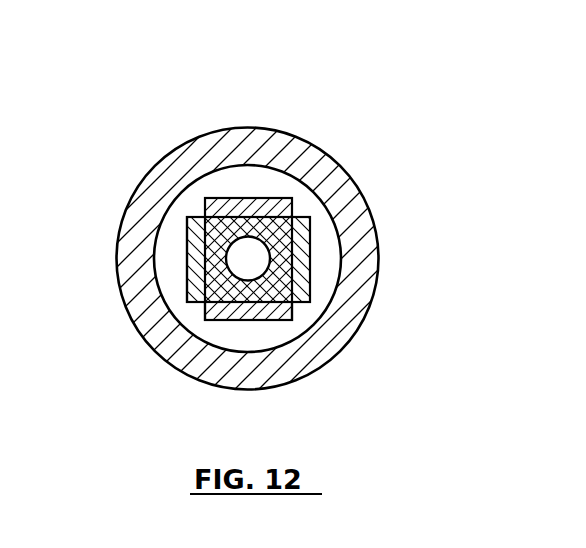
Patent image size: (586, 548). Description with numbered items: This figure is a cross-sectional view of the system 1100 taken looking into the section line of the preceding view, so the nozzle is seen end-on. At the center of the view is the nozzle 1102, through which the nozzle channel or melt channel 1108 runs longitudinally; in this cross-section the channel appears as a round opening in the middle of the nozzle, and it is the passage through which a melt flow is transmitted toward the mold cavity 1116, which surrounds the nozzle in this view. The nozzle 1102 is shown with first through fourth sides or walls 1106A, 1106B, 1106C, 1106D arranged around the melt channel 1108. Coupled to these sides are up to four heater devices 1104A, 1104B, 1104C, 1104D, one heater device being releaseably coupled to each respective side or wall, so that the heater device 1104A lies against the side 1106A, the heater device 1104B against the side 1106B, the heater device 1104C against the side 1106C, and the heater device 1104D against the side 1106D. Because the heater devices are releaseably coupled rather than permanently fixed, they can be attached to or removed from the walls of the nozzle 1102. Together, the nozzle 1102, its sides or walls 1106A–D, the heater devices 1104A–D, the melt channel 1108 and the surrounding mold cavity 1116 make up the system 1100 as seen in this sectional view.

The system 1100 is at (292, 259).
The nozzle 1102 is at (281, 290).
The heater device 1104A is at (266, 201).
The heater device 1104B is at (300, 234).
The heater device 1104C is at (223, 314).
The heater device 1104D is at (193, 222).
The side or wall 1106A is at (285, 211).
The side or wall 1106B is at (292, 248).
The side or wall 1106C is at (205, 308).
The side or wall 1106D is at (205, 239).
The nozzle channel or melt channel 1108 is at (229, 262).
The mold cavity 1116 is at (288, 147).